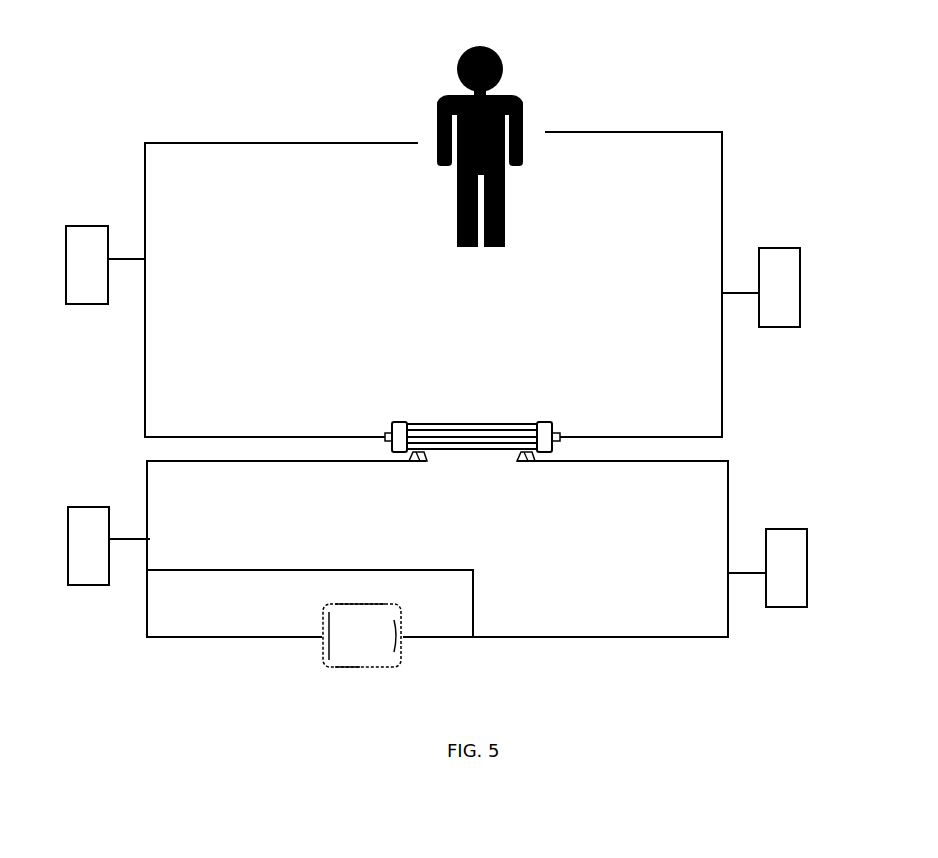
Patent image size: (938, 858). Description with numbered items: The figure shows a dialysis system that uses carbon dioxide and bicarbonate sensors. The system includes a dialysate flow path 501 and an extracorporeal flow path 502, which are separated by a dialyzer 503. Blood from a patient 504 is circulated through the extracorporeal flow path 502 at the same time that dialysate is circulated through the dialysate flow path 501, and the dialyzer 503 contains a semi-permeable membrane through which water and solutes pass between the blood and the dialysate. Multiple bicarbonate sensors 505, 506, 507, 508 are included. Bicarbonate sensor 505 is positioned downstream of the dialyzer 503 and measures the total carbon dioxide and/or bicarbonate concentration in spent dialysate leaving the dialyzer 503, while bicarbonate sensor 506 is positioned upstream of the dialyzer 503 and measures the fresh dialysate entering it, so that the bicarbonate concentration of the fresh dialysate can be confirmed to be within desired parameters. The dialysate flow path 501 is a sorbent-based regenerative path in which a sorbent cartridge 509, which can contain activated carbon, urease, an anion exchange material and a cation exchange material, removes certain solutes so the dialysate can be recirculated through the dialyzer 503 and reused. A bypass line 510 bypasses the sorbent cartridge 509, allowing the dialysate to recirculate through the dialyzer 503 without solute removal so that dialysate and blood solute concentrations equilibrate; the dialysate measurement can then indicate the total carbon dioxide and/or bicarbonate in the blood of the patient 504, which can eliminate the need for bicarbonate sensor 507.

The dialysate flow path 501 is at (670, 645).
The extracorporeal flow path 502 is at (722, 190).
The dialyzer 503 is at (478, 423).
The patient 504 is at (480, 130).
The bicarbonate sensor 505 is at (75, 559).
The bicarbonate sensor 506 is at (805, 564).
The bicarbonate sensor 507 is at (81, 243).
The bicarbonate sensor 508 is at (785, 281).
The sorbent cartridge 509 is at (362, 659).
The bypass line 510 is at (275, 568).